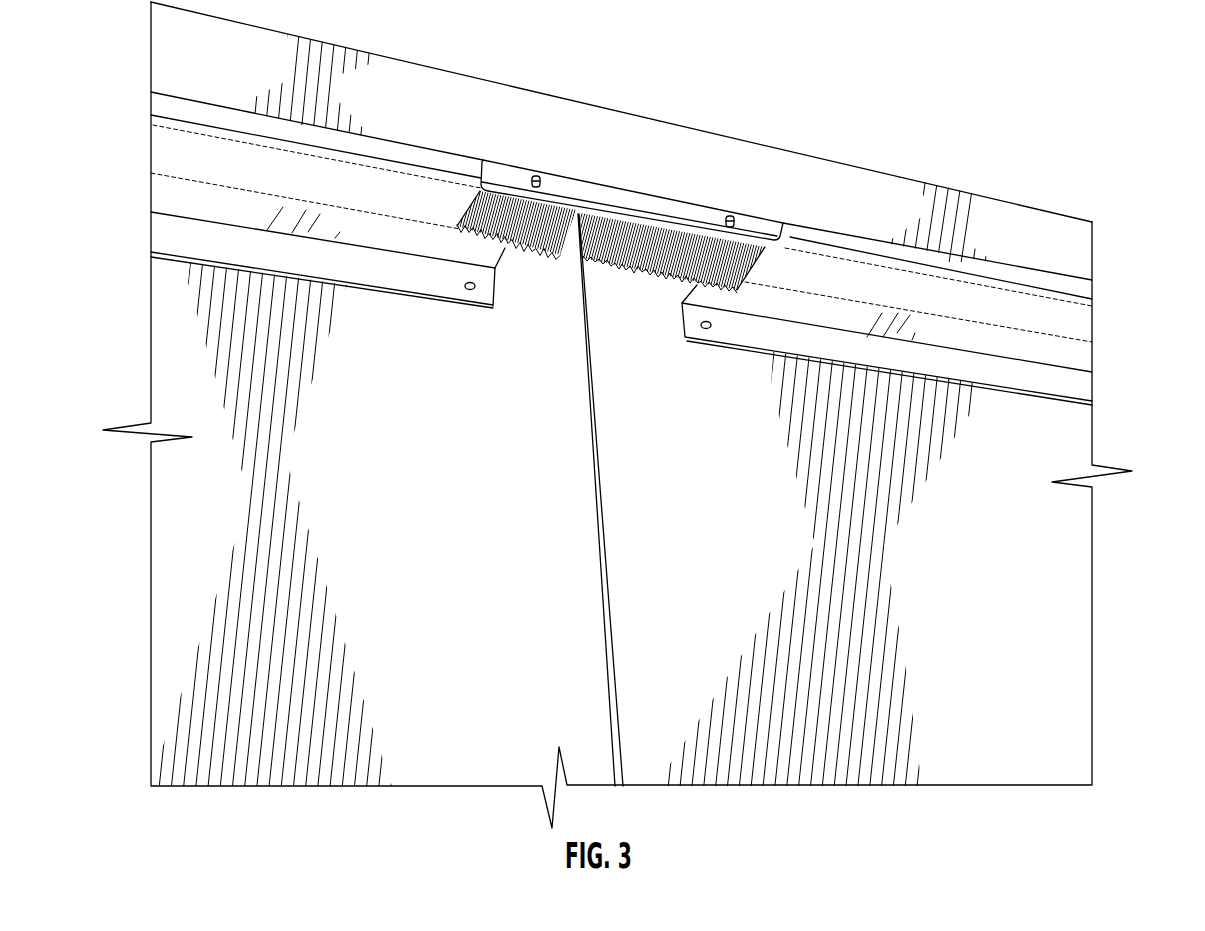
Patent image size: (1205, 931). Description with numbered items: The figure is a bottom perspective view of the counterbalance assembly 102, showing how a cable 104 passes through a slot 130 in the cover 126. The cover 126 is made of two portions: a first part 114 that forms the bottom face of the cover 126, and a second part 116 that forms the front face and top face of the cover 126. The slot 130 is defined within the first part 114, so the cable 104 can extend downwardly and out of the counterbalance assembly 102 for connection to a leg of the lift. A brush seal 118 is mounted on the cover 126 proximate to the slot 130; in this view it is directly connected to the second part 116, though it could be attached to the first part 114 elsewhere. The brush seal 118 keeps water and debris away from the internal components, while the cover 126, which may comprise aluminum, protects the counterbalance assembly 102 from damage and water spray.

The counterbalance assembly 102 is at (127, 140).
The cable 104 is at (613, 702).
The first part 114 is at (1027, 323).
The second part 116 is at (1088, 270).
The brush seal 118 is at (480, 207).
The cover 126 is at (1062, 235).
The slot 130 is at (538, 303).